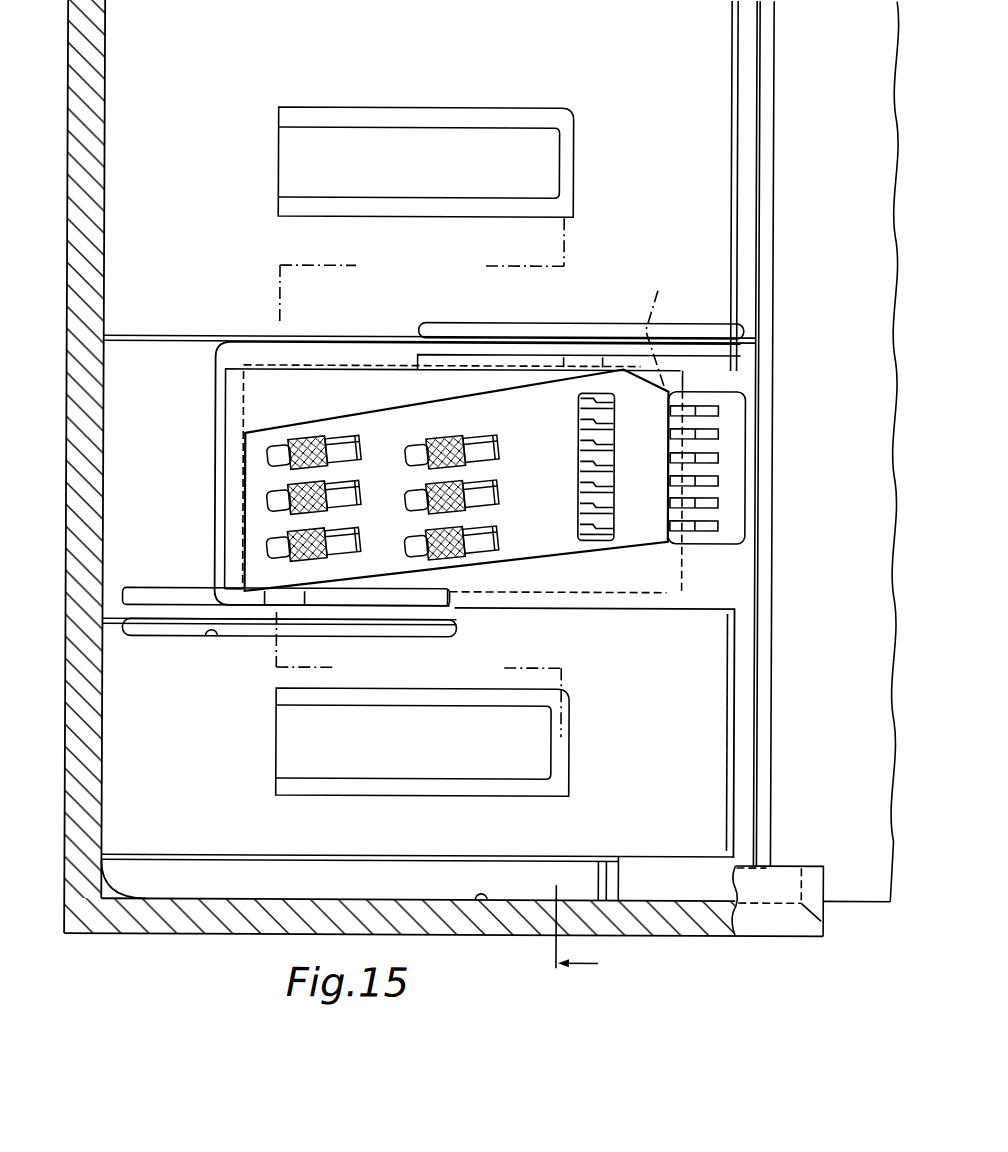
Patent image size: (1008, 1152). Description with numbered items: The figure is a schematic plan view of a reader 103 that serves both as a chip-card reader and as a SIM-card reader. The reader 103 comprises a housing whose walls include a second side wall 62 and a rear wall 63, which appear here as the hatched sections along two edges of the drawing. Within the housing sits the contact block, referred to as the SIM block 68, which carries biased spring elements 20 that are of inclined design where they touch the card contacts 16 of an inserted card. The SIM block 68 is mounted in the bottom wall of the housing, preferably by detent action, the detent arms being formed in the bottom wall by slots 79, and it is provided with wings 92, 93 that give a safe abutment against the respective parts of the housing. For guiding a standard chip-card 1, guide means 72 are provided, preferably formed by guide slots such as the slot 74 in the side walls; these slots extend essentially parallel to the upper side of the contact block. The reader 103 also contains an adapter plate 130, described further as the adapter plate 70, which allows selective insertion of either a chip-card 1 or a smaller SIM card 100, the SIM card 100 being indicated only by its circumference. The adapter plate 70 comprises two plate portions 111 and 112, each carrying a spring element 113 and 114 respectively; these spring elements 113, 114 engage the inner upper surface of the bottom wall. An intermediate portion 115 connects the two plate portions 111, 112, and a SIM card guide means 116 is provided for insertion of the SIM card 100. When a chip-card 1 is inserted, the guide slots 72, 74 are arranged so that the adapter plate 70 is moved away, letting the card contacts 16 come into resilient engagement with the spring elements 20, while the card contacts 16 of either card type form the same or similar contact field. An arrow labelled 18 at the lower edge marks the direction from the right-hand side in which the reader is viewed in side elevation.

The chip-card 1 is at (872, 902).
The card contacts 16 is at (437, 557).
The section line 18 is at (601, 931).
The spring elements 20 is at (497, 532).
The second side wall 62 is at (227, 918).
The rear wall 63 is at (82, 760).
The SIM block 68 is at (527, 405).
The adapter plate 70 is at (703, 200).
The guide means 72 is at (795, 4).
The guide slot 74 is at (485, 905).
The slots 79 is at (463, 323).
The wing 92 is at (293, 395).
The wing 93 is at (622, 595).
The SIM card 100 is at (626, 428).
The reader 103 is at (134, 945).
The plate portion 111 is at (703, 240).
The plate portion 112 is at (697, 797).
The spring element 113 is at (437, 150).
The spring element 114 is at (420, 765).
The intermediate portion 115 is at (157, 373).
The SIM card guide means 116 is at (690, 330).
The adapter plate 130 is at (682, 667).